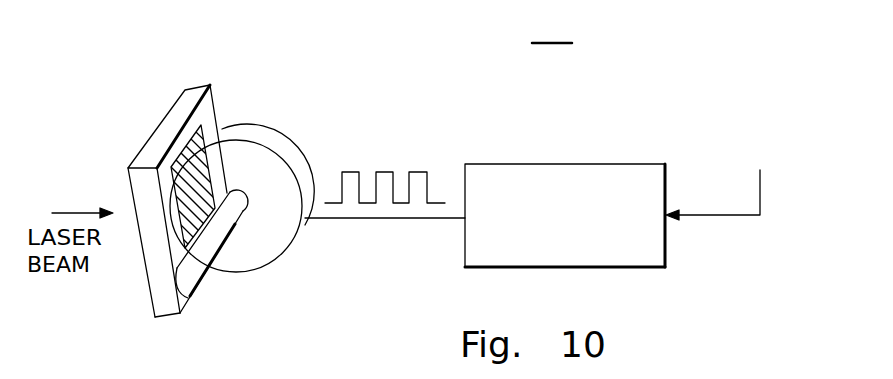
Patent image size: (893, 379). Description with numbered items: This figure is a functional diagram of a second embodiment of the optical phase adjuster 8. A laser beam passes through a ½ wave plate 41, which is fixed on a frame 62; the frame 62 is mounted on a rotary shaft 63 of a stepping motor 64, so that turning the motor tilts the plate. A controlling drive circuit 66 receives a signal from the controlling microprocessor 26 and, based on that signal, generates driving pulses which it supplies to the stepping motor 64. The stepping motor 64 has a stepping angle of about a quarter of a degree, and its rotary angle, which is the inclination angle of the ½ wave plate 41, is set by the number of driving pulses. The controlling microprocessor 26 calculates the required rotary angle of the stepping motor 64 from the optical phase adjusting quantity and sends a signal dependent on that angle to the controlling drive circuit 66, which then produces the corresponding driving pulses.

The optical phase adjuster 8 is at (552, 30).
The ½ wave plate 41 is at (199, 150).
The frame 62 is at (152, 305).
The rotary shaft 63 is at (199, 263).
The stepping motor 64 is at (290, 242).
The controlling drive circuit 66 is at (512, 163).
The controlling microprocessor 26 is at (740, 138).